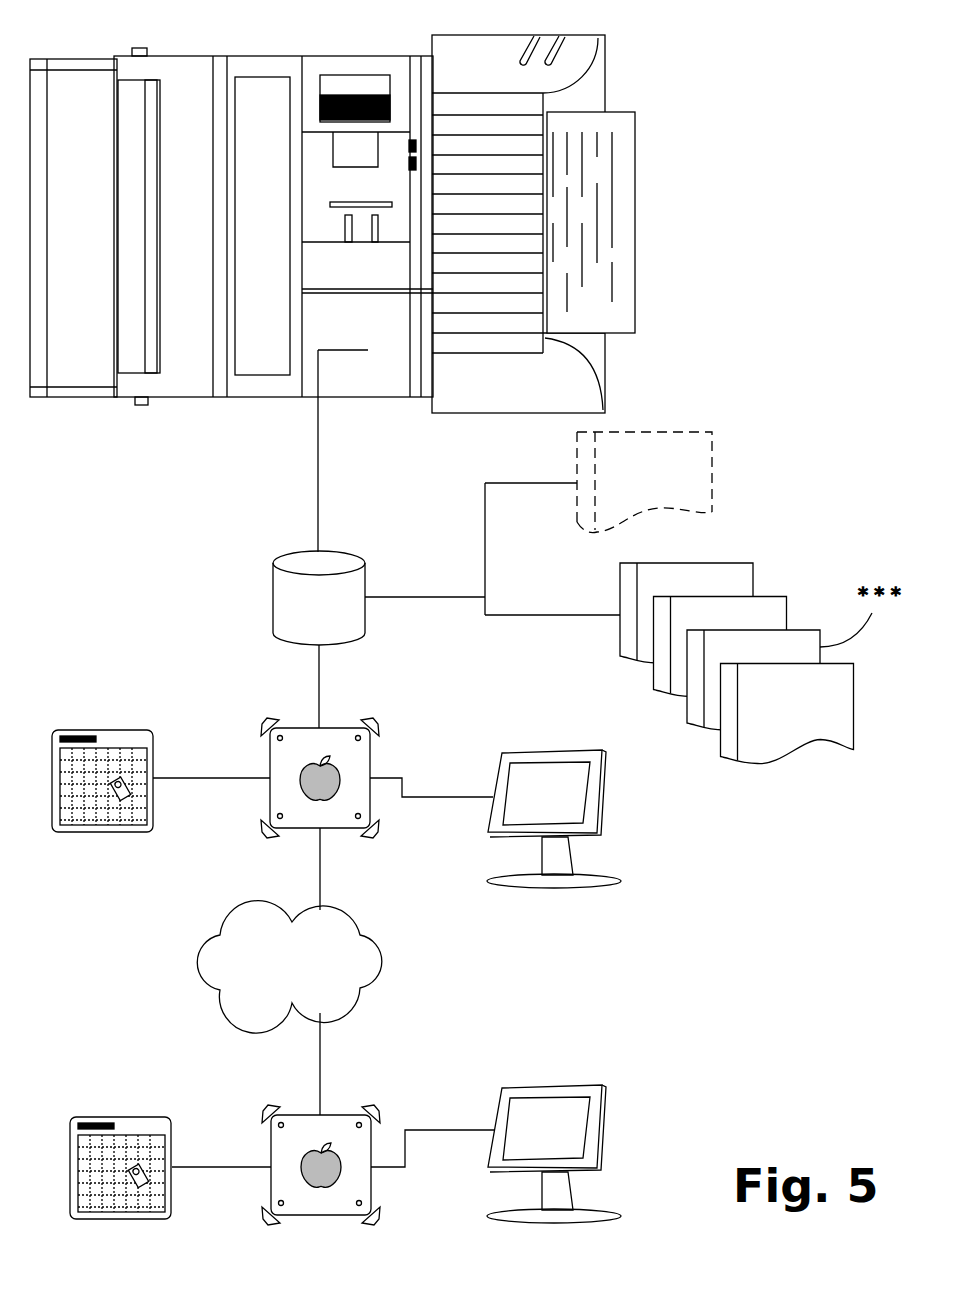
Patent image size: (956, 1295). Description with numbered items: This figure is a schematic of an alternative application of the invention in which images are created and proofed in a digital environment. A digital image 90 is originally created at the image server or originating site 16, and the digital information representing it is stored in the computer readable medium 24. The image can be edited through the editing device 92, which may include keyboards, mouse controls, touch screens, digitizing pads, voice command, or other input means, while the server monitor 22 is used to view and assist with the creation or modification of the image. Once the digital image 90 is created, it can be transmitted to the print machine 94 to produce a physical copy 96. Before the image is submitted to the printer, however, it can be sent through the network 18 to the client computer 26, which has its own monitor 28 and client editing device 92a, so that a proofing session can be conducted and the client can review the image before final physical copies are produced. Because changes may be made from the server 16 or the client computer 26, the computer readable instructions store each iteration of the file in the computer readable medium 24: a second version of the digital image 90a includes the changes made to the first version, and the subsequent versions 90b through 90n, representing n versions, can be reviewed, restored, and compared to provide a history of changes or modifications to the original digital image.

The image server 16 is at (260, 735).
The network 18 is at (388, 960).
The server monitor 22 is at (602, 790).
The computer readable medium 24 is at (273, 597).
The client computer 26 is at (263, 1123).
The client monitor 28 is at (605, 1105).
The digital image 90 is at (712, 482).
The second version of digital image 90a is at (753, 578).
The subsequent version of digital image 90b is at (787, 612).
The nth version of digital image 90n is at (855, 680).
The editing device 92 is at (93, 730).
The client editing device 92a is at (113, 1117).
The print machine 94 is at (132, 412).
The physical copy 96 is at (635, 188).